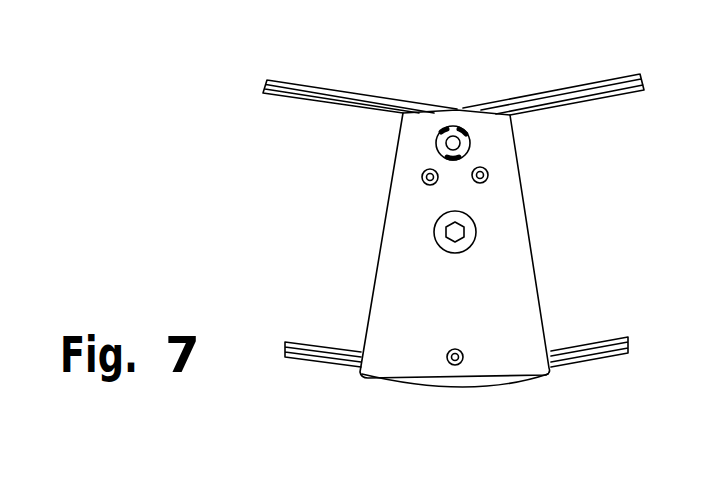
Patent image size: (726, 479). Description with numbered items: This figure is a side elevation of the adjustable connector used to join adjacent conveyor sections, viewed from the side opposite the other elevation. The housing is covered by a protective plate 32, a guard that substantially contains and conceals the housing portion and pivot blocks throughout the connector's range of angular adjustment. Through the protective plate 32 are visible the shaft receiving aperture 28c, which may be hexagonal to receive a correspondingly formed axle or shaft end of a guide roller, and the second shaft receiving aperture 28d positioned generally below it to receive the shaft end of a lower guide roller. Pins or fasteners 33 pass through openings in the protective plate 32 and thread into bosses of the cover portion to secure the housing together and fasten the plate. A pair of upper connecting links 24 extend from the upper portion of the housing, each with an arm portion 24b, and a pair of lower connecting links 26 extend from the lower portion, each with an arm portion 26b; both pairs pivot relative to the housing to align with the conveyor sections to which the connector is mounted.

The upper connecting links 24 is at (379, 99).
The arm portion 24b is at (312, 103).
The lower connecting links 26 is at (333, 346).
The arm portion 26b is at (320, 362).
The shaft receiving aperture 28c is at (463, 146).
The second shaft receiving aperture 28d is at (465, 231).
The protective plate 32 is at (522, 295).
The fasteners 33 is at (435, 182).